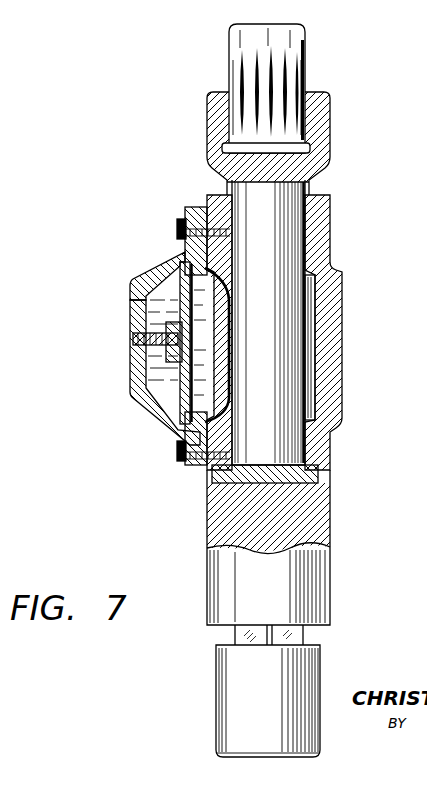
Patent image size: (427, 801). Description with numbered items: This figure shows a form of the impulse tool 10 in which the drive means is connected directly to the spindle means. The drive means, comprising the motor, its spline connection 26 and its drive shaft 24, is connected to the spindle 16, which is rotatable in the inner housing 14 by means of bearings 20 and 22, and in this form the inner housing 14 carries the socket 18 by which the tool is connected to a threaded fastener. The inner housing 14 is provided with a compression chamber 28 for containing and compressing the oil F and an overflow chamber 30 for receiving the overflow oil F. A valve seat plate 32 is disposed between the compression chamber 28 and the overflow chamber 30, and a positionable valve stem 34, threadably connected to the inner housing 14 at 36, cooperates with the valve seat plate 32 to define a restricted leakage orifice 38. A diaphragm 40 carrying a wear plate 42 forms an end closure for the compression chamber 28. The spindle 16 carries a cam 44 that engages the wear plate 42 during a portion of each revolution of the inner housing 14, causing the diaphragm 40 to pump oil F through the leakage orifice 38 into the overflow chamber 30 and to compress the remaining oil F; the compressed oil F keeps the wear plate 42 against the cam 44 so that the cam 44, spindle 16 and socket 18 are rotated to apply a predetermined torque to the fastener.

The impulse tool 10 is at (150, 452).
The inner housing 14 is at (220, 533).
The spindle 16 is at (273, 248).
The socket 18 is at (242, 687).
The bearing 20 is at (310, 466).
The bearing 22 is at (312, 212).
The drive shaft 24 is at (307, 42).
The spline connection 26 is at (307, 86).
The compression chamber 28 is at (175, 262).
The overflow chamber 30 is at (148, 297).
The valve seat plate 32 is at (131, 282).
The valve stem 34 is at (127, 388).
The threaded connection 36 is at (131, 331).
The leakage orifice 38 is at (220, 345).
The diaphragm 40 is at (202, 203).
The wear plate 42 is at (224, 372).
The cam 44 is at (308, 348).
The oil F is at (208, 303).